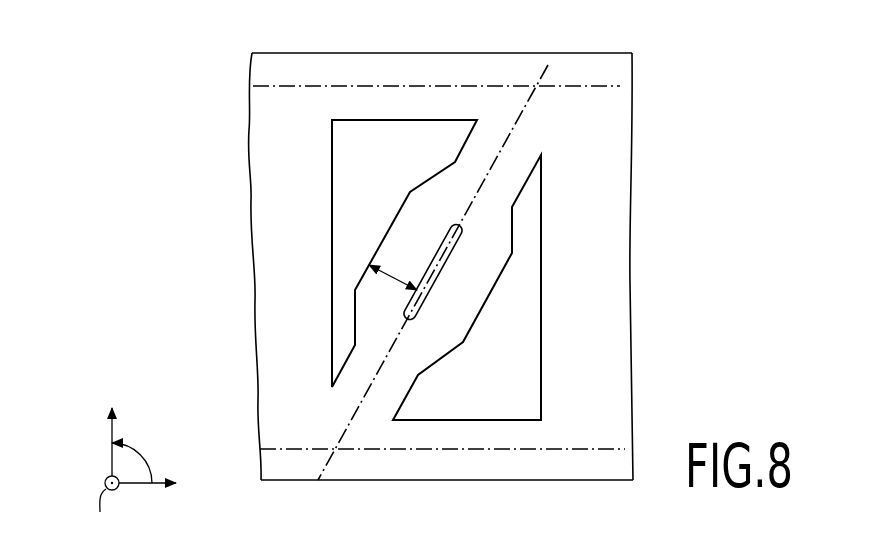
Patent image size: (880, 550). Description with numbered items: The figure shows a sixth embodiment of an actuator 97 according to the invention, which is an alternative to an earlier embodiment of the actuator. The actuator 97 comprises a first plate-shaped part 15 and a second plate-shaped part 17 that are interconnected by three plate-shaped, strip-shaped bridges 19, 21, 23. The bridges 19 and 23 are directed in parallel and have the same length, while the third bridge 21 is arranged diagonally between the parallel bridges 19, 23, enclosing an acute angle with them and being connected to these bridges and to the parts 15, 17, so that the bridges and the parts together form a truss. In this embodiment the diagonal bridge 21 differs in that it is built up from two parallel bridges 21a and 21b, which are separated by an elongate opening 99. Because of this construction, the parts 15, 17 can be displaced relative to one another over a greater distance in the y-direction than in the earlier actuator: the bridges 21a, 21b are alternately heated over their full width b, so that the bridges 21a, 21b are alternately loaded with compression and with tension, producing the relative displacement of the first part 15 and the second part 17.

The actuator 97 is at (233, 52).
The first plate-shaped part 15 is at (273, 133).
The second plate-shaped part 17 is at (610, 299).
The bridge 19 is at (421, 68).
The bridge 23 is at (450, 467).
The third bridge 21 is at (419, 172).
The bridge 21a is at (398, 247).
The bridge 21b is at (478, 293).
The elongate opening 99 is at (446, 236).